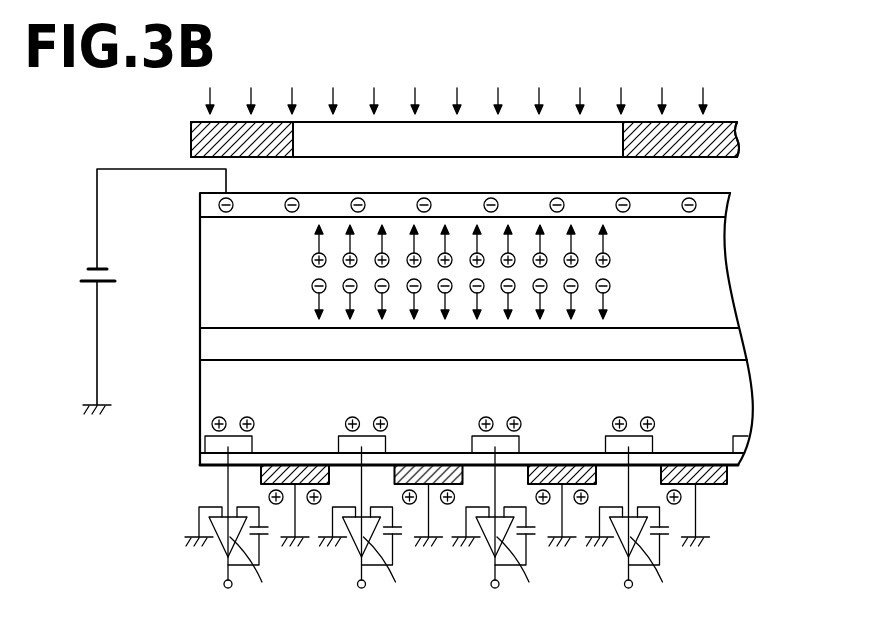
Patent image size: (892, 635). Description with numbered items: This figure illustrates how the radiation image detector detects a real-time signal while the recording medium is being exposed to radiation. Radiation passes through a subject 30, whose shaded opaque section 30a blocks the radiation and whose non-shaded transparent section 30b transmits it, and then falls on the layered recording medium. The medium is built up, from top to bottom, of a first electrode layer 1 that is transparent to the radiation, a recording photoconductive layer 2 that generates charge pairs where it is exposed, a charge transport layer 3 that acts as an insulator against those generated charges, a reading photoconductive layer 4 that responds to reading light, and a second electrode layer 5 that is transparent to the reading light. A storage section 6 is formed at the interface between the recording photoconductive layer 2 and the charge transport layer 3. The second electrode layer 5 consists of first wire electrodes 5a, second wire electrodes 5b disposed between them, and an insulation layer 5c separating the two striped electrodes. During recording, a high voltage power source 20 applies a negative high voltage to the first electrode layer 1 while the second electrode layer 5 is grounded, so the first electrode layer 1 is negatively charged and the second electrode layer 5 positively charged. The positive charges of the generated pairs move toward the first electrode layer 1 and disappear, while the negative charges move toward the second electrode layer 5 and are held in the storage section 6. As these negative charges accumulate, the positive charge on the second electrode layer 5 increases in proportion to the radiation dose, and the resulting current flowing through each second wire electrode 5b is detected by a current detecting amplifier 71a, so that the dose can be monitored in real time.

The subject 30 is at (760, 112).
The opaque section 30a is at (198, 130).
The transparent section 30b is at (437, 143).
The first electrode layer 1 is at (723, 208).
The recording photoconductive layer 2 is at (718, 285).
The storage section 6 is at (721, 325).
The charge transport layer 3 is at (737, 347).
The reading photoconductive layer 4 is at (743, 392).
The second electrode layer 5 is at (823, 405).
The second wire electrodes 5b is at (742, 443).
The insulation layer 5c is at (740, 473).
The first wire electrodes 5a is at (727, 483).
The high voltage power source 20 is at (82, 273).
The current detecting amplifier 71a is at (447, 530).